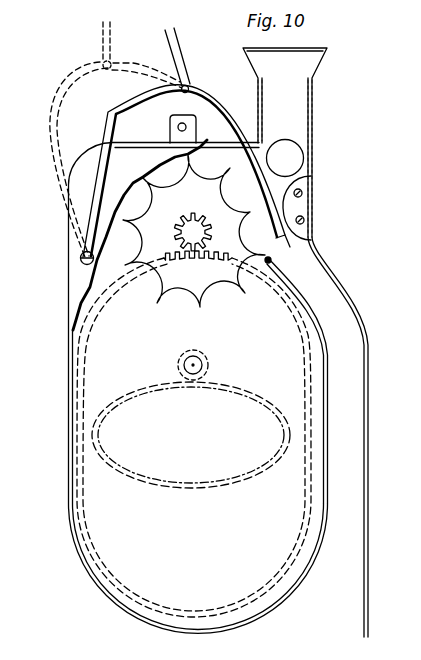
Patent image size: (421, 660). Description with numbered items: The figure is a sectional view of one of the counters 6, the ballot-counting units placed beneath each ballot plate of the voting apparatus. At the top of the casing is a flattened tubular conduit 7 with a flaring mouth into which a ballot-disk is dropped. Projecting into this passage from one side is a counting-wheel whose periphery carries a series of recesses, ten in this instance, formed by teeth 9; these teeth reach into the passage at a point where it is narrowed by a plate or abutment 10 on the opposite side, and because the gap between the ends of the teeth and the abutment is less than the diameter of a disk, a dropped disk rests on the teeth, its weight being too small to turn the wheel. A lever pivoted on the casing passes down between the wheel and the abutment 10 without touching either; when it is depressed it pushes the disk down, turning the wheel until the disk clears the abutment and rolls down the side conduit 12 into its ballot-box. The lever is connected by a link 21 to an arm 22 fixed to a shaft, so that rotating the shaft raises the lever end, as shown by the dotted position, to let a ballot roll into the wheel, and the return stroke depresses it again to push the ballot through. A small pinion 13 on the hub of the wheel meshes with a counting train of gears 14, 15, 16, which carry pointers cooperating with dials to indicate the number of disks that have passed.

The counter 6 is at (190, 374).
The flattened tubular conduit 7 is at (312, 73).
The teeth 9 is at (236, 173).
The plate or abutment 10 is at (289, 190).
The conduit 12 is at (317, 437).
The small pinion 13 is at (178, 229).
The gear 14 is at (92, 326).
The gear 15 is at (191, 360).
The gear 16 is at (145, 390).
The link 21 is at (151, 57).
The arm 22 is at (284, 240).